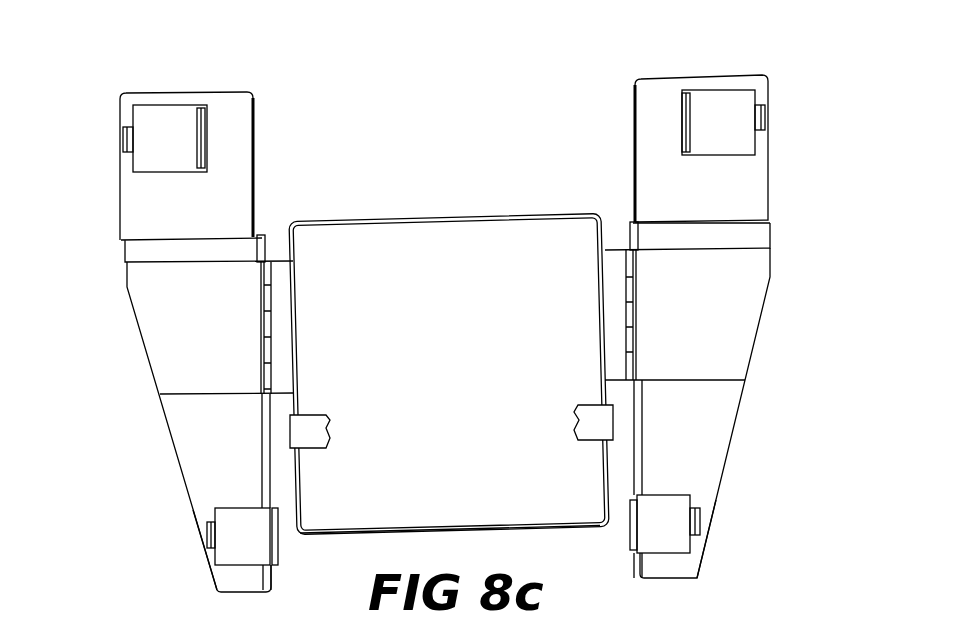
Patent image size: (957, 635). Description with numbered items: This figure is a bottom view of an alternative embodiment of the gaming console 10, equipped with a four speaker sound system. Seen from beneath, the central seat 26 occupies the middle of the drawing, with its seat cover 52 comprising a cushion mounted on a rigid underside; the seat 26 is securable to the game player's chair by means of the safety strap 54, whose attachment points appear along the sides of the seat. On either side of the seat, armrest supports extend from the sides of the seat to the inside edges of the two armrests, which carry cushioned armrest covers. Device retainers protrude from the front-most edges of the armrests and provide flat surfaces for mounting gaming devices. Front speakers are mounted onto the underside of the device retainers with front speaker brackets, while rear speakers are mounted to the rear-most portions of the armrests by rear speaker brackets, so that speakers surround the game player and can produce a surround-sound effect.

The gaming console 10 is at (417, 74).
The seat 26 is at (370, 534).
The seat cover 52 is at (553, 527).
The safety strap 54 is at (311, 422).